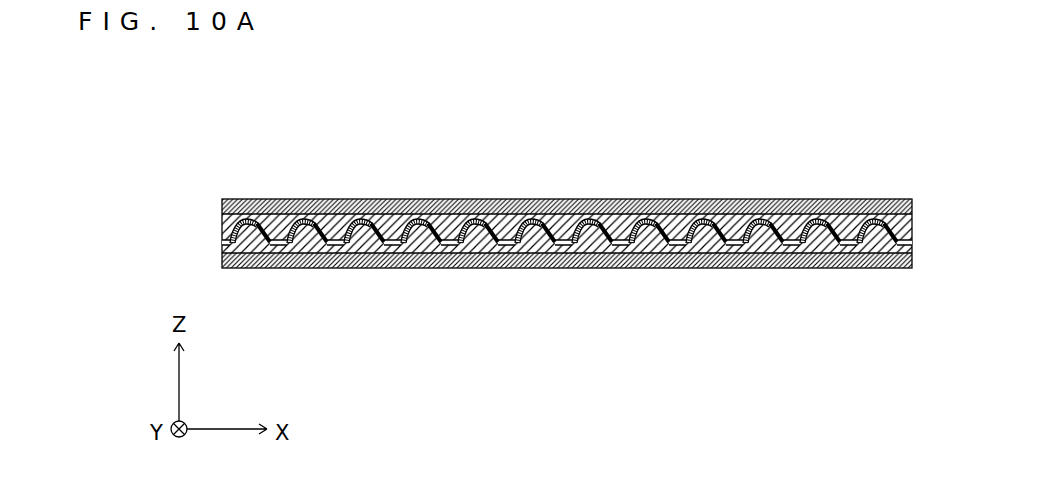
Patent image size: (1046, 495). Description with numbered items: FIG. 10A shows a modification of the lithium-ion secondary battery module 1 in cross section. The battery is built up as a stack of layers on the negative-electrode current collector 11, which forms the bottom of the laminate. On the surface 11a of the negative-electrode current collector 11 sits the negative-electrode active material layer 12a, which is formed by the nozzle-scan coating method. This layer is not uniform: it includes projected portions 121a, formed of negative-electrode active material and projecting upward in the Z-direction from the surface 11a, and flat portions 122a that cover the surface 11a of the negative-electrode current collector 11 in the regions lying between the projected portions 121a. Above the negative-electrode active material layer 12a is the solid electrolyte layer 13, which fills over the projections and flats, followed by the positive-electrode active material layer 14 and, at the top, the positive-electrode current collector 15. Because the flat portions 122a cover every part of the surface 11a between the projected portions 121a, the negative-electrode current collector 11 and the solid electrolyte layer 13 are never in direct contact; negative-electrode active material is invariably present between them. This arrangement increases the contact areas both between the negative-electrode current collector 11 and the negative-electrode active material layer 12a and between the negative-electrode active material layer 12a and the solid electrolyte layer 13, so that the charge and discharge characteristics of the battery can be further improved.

The lithium-ion secondary battery module 1 is at (373, 157).
The negative-electrode current collector 11 is at (435, 268).
The surface of the negative-electrode current collector 11a is at (622, 253).
The negative-electrode active material layer 12a is at (563, 156).
The projected portions 121a is at (752, 236).
The flat portions 122a is at (682, 118).
The solid electrolyte layer 13 is at (222, 240).
The positive-electrode active material layer 14 is at (222, 227).
The positive-electrode current collector 15 is at (480, 199).